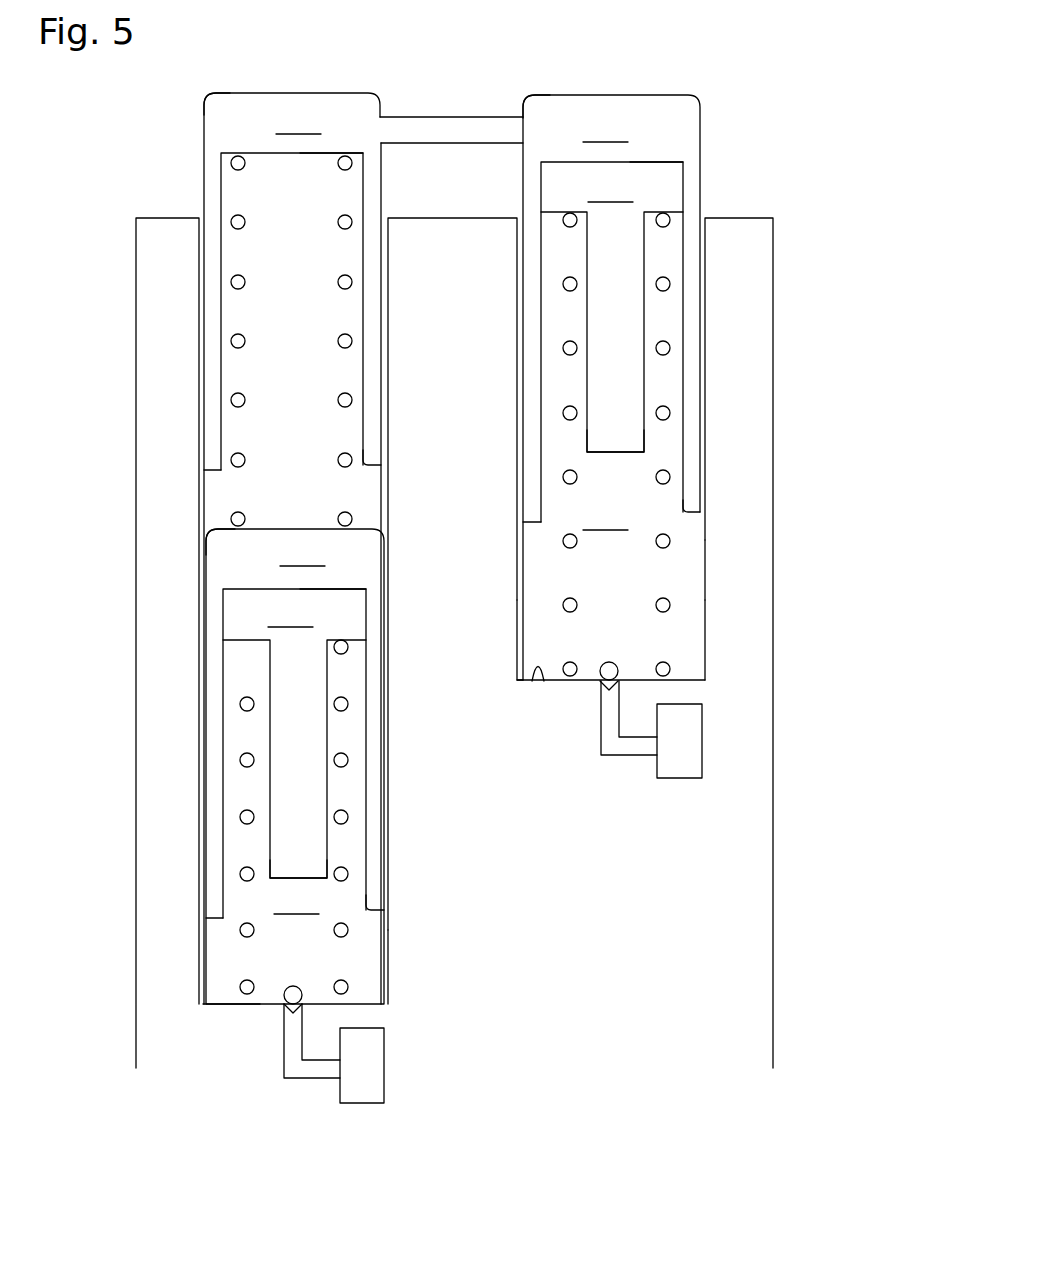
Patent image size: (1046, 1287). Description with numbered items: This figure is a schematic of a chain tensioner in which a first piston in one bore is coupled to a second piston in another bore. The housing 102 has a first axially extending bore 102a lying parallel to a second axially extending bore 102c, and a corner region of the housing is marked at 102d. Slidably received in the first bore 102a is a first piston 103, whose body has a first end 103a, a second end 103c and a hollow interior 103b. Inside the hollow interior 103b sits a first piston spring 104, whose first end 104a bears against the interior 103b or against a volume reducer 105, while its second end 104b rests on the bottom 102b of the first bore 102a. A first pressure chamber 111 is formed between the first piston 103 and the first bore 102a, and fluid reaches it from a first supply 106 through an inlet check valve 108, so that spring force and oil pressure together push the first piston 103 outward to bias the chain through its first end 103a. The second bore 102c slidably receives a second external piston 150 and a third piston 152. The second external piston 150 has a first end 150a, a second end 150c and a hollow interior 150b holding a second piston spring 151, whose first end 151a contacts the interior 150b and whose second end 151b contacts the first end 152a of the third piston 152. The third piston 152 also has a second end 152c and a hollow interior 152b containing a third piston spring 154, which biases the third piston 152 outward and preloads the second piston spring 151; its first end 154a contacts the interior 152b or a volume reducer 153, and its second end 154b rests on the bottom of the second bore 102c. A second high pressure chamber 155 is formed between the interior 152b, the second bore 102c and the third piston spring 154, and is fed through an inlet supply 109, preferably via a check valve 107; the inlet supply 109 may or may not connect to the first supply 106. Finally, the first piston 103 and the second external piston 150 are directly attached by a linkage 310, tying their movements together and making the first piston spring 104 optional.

The housing 102 is at (770, 862).
The first axially extending bore 102a is at (693, 556).
The bottom of the first axially extending bore 102b is at (519, 683).
The second axially extending bore 102c is at (391, 941).
The frame portion 102d is at (221, 1004).
The first piston 103 is at (611, 387).
The first end of the first piston 103a is at (592, 95).
The hollow interior of the first piston 103b is at (637, 162).
The second end of the first piston 103c is at (686, 515).
The first piston spring 104 is at (660, 346).
The first end of the first piston spring 104a is at (668, 218).
The second end of the first piston spring 104b is at (670, 670).
The volume reducer 105 is at (612, 315).
The first supply 106 is at (625, 756).
The check valve 107 is at (291, 1000).
The inlet check valve 108 is at (613, 674).
The inlet supply 109 is at (288, 1079).
The first pressure chamber 111 is at (613, 480).
The second external piston 150 is at (292, 548).
The first end of the second external piston 150a is at (297, 93).
The hollow interior of the second external piston 150b is at (309, 153).
The second end of the second external piston 150c is at (366, 466).
The second piston spring 151 is at (230, 224).
The first end of the second piston spring 151a is at (230, 164).
The second end of the second piston spring 151b is at (230, 520).
The third piston 152 is at (295, 766).
The first end of the third piston 152a is at (303, 530).
The hollow interior of the third piston 152b is at (313, 590).
The second end of the third piston 152c is at (380, 912).
The volume reducer 153 is at (294, 741).
The third piston spring 154 is at (212, 917).
The first end of the third piston spring 154a is at (347, 650).
The second end of the third piston spring 154b is at (346, 992).
The second high pressure chamber 155 is at (298, 887).
The linkage 310 is at (441, 116).